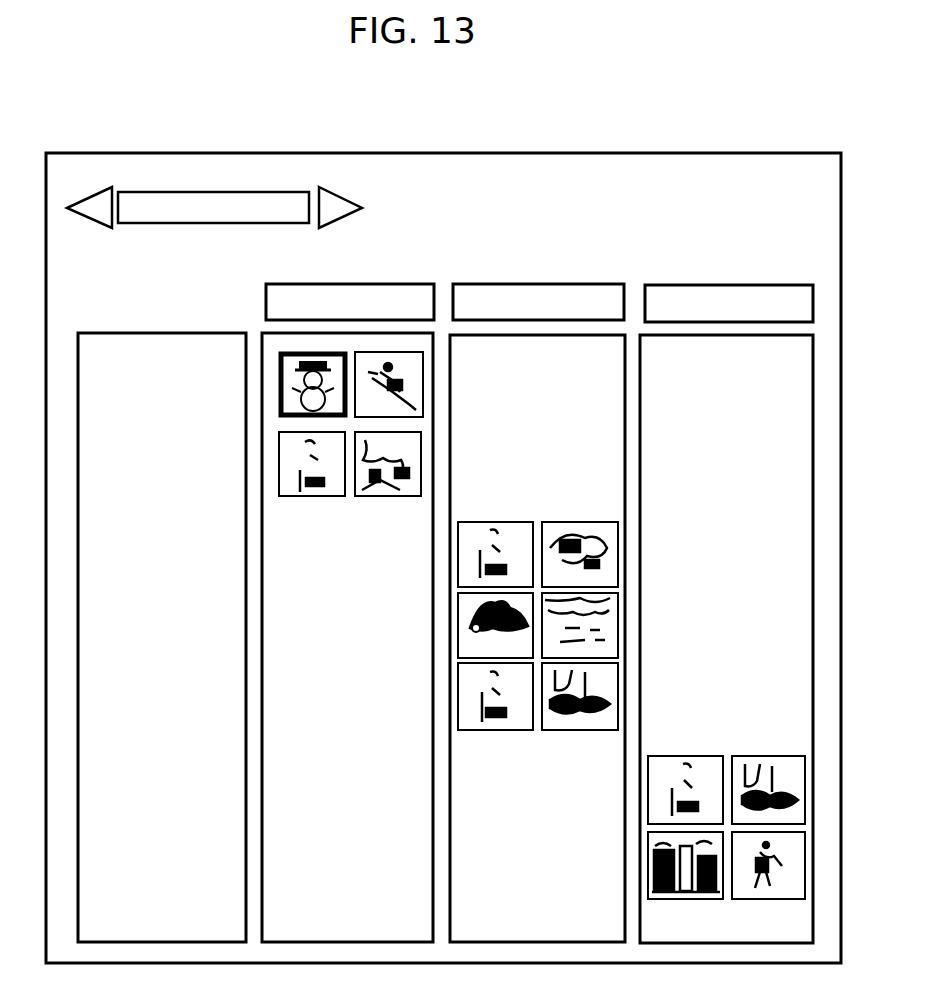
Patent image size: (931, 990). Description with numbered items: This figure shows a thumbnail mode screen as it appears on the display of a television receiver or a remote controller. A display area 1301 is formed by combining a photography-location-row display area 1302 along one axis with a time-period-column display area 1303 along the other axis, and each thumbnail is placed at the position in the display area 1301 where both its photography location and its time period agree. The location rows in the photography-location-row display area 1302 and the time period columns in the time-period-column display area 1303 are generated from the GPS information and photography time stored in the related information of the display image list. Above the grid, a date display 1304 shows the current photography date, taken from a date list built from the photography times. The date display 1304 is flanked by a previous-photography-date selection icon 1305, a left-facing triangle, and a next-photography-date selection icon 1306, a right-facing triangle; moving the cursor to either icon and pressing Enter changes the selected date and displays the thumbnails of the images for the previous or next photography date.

The display area 1301 is at (542, 152).
The photography-location-row display area 1302 is at (681, 284).
The time-period-column display area 1303 is at (124, 340).
The date display 1304 is at (200, 190).
The previous-photography-date selection icon 1305 is at (101, 186).
The next-photography-date selection icon 1306 is at (334, 190).